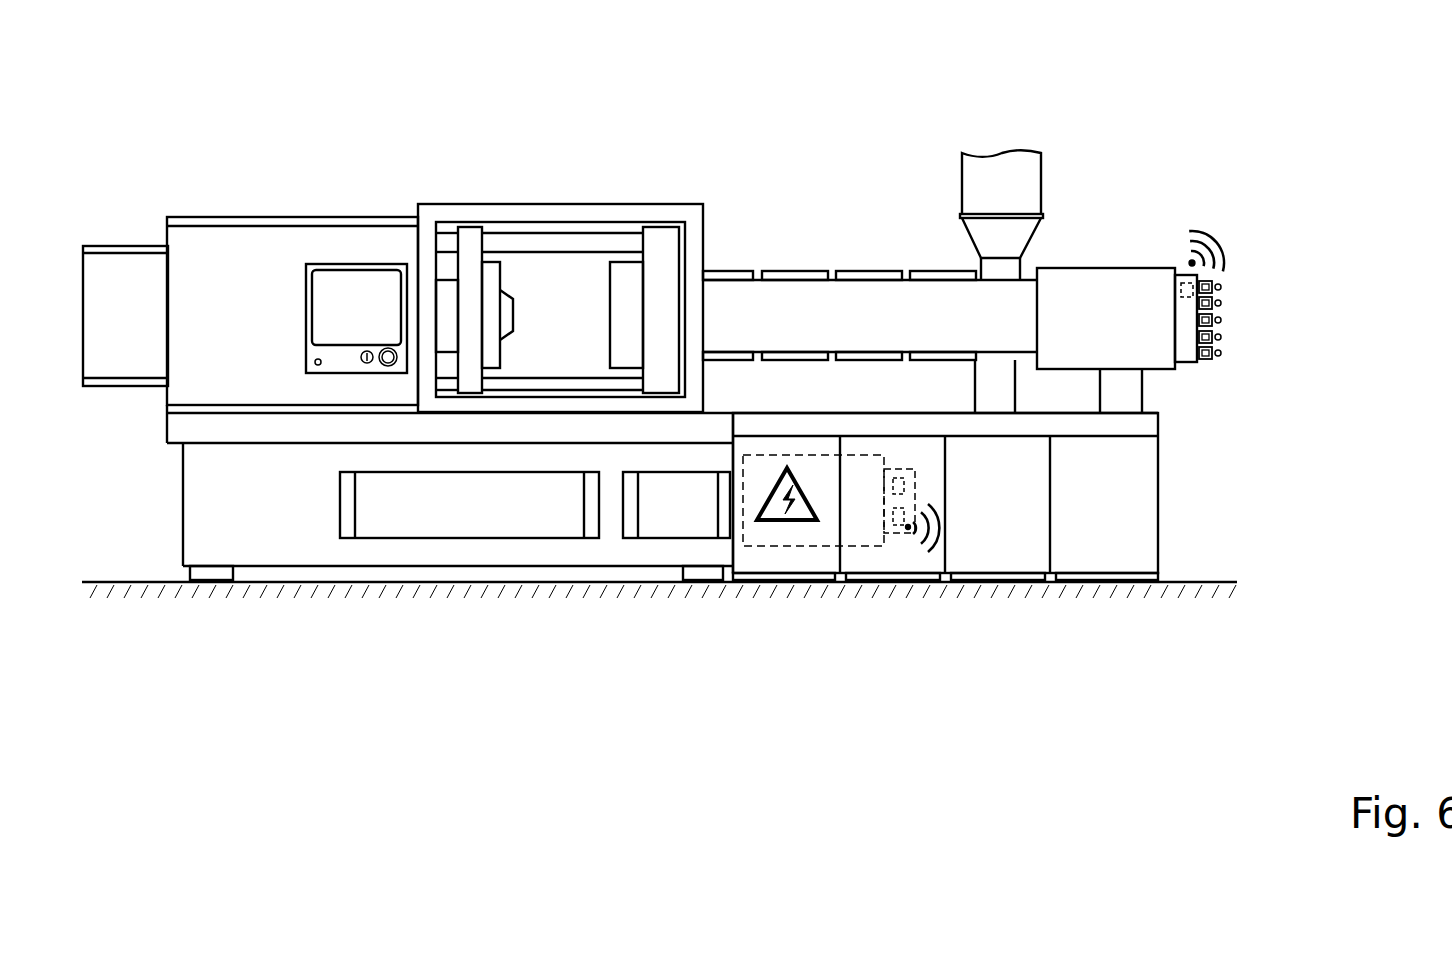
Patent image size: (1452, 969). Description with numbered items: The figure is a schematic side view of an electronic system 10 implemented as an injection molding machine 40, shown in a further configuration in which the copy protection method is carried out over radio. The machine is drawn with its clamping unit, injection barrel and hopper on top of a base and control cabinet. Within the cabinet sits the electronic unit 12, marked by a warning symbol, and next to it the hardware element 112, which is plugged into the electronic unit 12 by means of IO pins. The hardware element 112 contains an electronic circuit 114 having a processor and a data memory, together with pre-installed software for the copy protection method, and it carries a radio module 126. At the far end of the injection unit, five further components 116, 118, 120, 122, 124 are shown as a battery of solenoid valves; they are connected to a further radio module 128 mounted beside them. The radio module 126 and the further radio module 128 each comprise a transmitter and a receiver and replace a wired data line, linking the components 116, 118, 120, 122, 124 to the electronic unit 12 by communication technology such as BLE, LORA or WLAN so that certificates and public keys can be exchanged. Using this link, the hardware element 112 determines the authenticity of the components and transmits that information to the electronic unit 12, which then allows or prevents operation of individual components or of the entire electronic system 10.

The electronic system 10 is at (656, 118).
The injection molding machine 40 is at (554, 158).
The electronic unit 12 is at (791, 547).
The hardware element 112 is at (900, 534).
The electronic circuit 114 is at (906, 482).
The radio module 126 is at (906, 512).
The further radio module 128 is at (1186, 280).
The further component 116 is at (1234, 287).
The further component 118 is at (1234, 303).
The further component 120 is at (1234, 320).
The further component 122 is at (1234, 337).
The further component 124 is at (1234, 353).